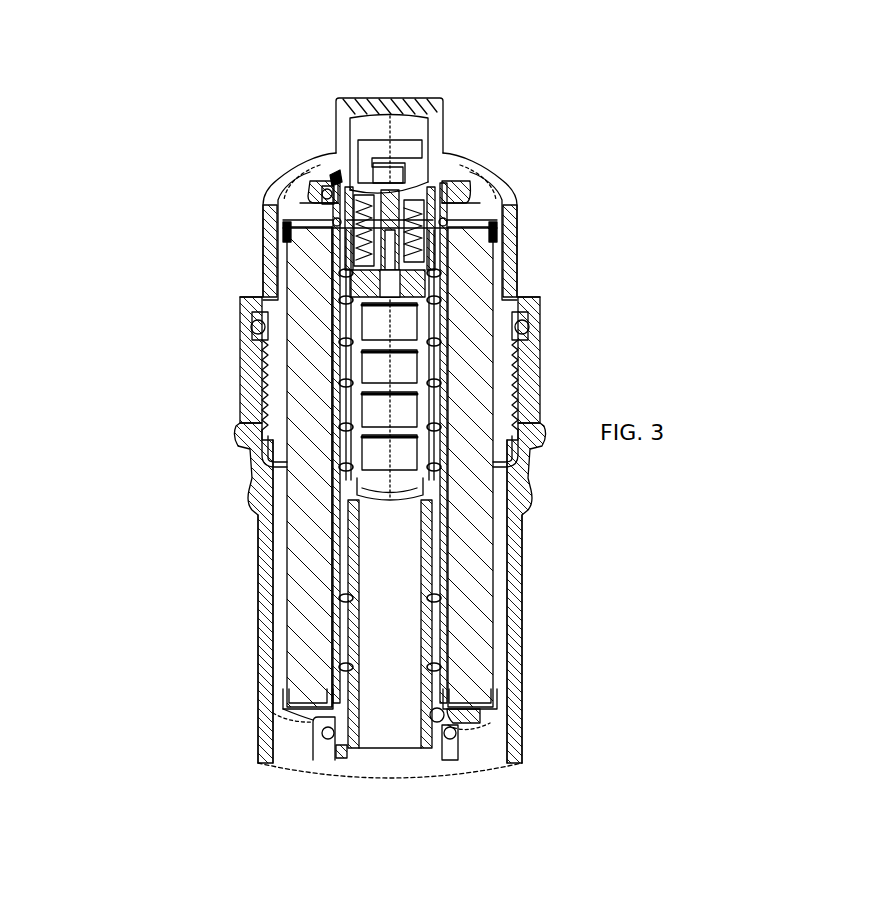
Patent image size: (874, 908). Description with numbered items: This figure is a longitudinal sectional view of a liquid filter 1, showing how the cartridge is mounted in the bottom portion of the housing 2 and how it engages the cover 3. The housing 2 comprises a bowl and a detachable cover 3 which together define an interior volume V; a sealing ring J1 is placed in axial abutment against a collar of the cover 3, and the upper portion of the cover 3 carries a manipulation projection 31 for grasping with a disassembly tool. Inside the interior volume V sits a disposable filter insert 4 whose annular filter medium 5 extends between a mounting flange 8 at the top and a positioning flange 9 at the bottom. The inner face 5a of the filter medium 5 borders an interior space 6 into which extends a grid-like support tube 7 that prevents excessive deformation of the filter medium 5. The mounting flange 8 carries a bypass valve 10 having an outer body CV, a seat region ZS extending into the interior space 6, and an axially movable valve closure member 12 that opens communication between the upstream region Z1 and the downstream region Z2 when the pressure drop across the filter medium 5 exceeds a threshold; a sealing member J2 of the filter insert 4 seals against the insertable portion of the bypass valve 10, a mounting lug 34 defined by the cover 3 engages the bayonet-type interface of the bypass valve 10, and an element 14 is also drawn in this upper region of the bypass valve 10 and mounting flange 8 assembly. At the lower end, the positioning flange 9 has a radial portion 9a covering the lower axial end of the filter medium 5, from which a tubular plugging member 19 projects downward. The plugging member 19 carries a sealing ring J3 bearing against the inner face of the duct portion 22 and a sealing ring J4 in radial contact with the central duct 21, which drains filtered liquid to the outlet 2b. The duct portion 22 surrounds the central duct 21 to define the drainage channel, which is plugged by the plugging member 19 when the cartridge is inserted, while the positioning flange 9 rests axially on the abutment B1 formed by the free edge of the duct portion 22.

The liquid filter 1 is at (233, 752).
The housing 2 is at (243, 322).
The outlet 2b is at (390, 743).
The cover 3 is at (517, 243).
The filter insert 4 is at (276, 570).
The filter medium 5 is at (463, 480).
The inner face of the filter medium 5a is at (335, 398).
The interior space 6 is at (373, 413).
The support tube 7 is at (357, 317).
The mounting flange 8 is at (493, 221).
The positioning flange 9 is at (497, 708).
The radial portion of the positioning flange 9a is at (480, 722).
The bypass valve 10 is at (343, 171).
The valve closure member 12 is at (349, 270).
The retaining nut 14 is at (467, 187).
The plugging member 19 is at (342, 753).
The central duct 21 is at (433, 618).
The duct portion 22 is at (320, 753).
The manipulation projection 31 is at (443, 118).
The mounting lug 34 is at (383, 171).
The abutment B1 is at (328, 706).
The outer body CV is at (338, 180).
The sealing ring J1 is at (527, 333).
The sealing member J2 is at (322, 192).
The sealing ring J3 is at (458, 738).
The sealing ring J4 is at (440, 720).
The interior volume V is at (277, 488).
The upstream region Z1 is at (287, 742).
The downstream region Z2 is at (392, 492).
The seat region ZS is at (360, 258).